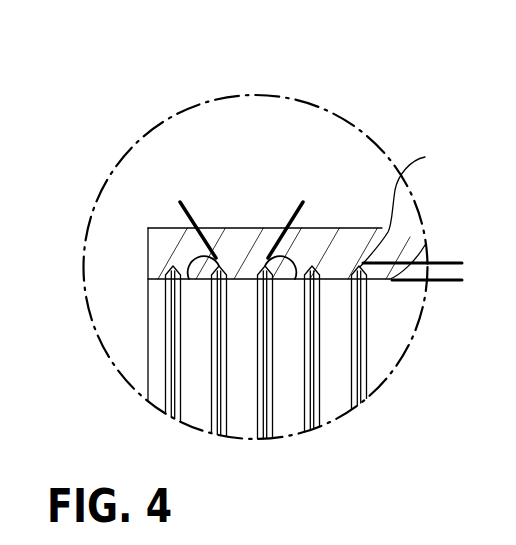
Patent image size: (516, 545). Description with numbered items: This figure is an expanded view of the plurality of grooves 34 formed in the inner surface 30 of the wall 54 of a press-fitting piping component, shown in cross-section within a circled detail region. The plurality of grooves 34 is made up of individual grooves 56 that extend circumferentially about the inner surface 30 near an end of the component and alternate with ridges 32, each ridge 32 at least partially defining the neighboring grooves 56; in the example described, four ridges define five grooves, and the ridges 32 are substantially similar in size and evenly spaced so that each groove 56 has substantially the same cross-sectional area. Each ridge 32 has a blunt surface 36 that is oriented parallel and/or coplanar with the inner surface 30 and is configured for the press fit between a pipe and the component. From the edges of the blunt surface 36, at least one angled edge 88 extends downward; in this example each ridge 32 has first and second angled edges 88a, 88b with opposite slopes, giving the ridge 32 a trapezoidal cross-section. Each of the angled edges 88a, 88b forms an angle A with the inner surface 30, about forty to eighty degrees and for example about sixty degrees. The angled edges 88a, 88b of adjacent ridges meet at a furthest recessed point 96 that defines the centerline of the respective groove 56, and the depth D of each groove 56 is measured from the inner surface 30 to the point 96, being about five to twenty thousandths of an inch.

The inner surface 30 is at (378, 342).
The ridge 32 is at (200, 402).
The plurality of grooves 34 is at (302, 152).
The blunt surface 36 is at (332, 323).
The wall 54 is at (168, 240).
The groove 56 is at (322, 432).
The angled edge 88 is at (407, 206).
The first angled edge 88a is at (221, 260).
The second angled edge 88b is at (262, 258).
The furthest recessed point 96 is at (323, 272).
The angle A is at (313, 265).
The depth D is at (448, 310).